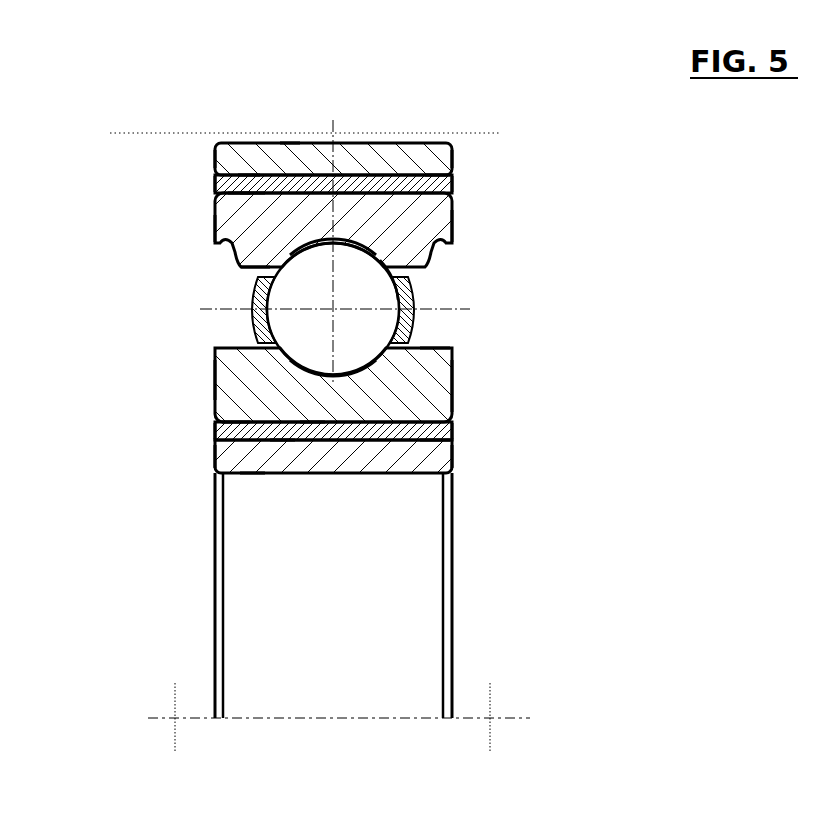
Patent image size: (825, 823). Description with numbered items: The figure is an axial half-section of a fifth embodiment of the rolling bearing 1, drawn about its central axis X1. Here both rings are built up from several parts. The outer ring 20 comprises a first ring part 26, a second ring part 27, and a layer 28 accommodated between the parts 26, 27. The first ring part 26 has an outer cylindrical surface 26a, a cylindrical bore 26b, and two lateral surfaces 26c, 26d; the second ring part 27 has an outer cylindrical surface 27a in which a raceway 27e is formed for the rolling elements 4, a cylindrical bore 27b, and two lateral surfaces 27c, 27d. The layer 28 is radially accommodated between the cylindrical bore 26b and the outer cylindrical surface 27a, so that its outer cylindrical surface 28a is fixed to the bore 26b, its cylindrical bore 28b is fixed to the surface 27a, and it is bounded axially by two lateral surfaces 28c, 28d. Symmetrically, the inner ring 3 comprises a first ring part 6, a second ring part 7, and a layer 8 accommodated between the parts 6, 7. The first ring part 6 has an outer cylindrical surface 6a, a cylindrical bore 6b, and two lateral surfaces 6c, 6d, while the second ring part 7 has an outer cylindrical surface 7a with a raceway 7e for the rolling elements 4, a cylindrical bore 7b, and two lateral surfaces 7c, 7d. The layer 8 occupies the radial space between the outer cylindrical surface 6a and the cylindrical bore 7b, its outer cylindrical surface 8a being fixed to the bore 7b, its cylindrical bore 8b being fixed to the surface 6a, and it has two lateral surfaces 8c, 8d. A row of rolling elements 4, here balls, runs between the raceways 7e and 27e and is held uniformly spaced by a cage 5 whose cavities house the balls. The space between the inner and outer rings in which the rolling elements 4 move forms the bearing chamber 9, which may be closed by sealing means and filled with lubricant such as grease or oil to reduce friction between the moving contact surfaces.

The rolling bearing 1 is at (550, 488).
The inner ring 3 is at (528, 505).
The rolling elements 4 is at (370, 289).
The cage 5 is at (398, 292).
The first ring part 6 is at (438, 486).
The outer cylindrical surface 6a is at (430, 402).
The cylindrical bore 6b is at (250, 478).
The lateral surface 6c is at (215, 465).
The lateral surface 6d is at (455, 465).
The second ring part 7 is at (362, 408).
The outer cylindrical surface 7a is at (445, 340).
The cylindrical bore 7b is at (288, 483).
The lateral surface 7c is at (215, 383).
The lateral surface 7d is at (455, 385).
The raceway 7e is at (358, 347).
The layer 8 is at (380, 447).
The outer cylindrical surface 8a is at (224, 405).
The cylindrical bore 8b is at (280, 482).
The lateral surface 8c is at (215, 433).
The lateral surface 8d is at (455, 433).
The bearing chamber 9 is at (232, 318).
The outer ring 20 is at (478, 60).
The first ring part 26 is at (437, 150).
The outer cylindrical surface 26a is at (290, 143).
The cylindrical bore 26b is at (442, 212).
The lateral surface 26c is at (215, 158).
The lateral surface 26d is at (455, 150).
The second ring part 27 is at (412, 184).
The outer cylindrical surface 27a is at (238, 193).
The cylindrical bore 27b is at (248, 272).
The lateral surface 27c is at (215, 228).
The lateral surface 27d is at (455, 228).
The raceway 27e is at (323, 243).
The layer 28 is at (352, 202).
The outer cylindrical surface 28a is at (248, 176).
The cylindrical bore 28b is at (255, 213).
The lateral surface 28c is at (215, 184).
The lateral surface 28d is at (455, 183).
The central axis X1 is at (339, 718).